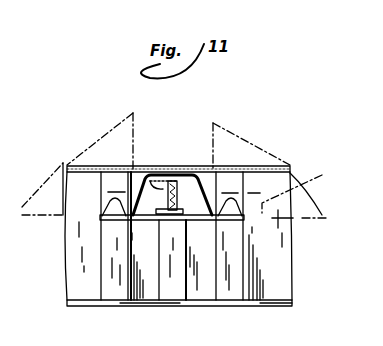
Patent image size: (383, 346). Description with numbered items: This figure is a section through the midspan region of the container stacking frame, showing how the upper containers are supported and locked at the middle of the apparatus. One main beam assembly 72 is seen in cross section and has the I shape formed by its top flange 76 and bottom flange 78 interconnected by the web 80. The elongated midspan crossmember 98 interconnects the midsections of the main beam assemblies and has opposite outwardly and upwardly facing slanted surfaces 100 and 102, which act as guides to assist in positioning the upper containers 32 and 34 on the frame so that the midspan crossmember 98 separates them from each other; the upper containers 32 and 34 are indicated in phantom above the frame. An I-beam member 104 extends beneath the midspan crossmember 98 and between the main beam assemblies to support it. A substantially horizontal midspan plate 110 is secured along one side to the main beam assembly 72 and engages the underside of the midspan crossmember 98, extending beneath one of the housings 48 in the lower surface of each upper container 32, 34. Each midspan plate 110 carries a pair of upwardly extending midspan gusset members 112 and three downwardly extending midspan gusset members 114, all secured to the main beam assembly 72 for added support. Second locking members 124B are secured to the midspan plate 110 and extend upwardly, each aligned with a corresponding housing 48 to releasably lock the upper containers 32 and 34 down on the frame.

The upper cargo container 32 is at (213, 124).
The upper cargo container 34 is at (133, 115).
The housing 48 is at (50, 183).
The main beam assembly 72 is at (276, 306).
The top flange 76 is at (291, 169).
The bottom flange 78 is at (252, 302).
The web 80 is at (73, 277).
The midspan crossmember 98 is at (210, 180).
The slanted surface 100 is at (137, 171).
The slanted surface 102 is at (230, 170).
The I-beam member 104 is at (161, 174).
The midspan plate 110 is at (100, 221).
The upwardly extending midspan gusset member 112 is at (72, 170).
The downwardly extending midspan gusset member 114 is at (148, 296).
The second locking member 124B is at (110, 205).